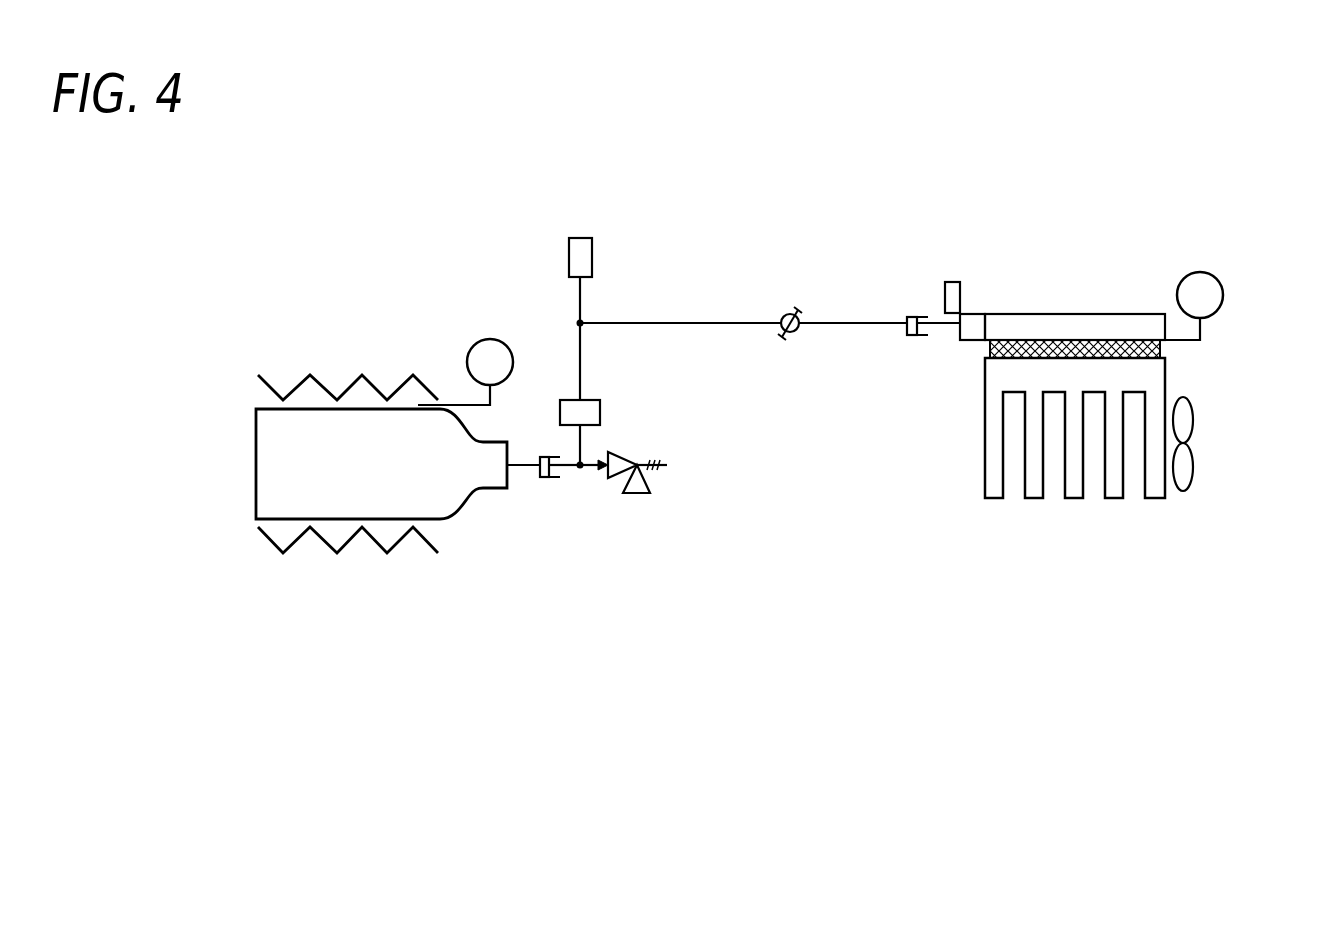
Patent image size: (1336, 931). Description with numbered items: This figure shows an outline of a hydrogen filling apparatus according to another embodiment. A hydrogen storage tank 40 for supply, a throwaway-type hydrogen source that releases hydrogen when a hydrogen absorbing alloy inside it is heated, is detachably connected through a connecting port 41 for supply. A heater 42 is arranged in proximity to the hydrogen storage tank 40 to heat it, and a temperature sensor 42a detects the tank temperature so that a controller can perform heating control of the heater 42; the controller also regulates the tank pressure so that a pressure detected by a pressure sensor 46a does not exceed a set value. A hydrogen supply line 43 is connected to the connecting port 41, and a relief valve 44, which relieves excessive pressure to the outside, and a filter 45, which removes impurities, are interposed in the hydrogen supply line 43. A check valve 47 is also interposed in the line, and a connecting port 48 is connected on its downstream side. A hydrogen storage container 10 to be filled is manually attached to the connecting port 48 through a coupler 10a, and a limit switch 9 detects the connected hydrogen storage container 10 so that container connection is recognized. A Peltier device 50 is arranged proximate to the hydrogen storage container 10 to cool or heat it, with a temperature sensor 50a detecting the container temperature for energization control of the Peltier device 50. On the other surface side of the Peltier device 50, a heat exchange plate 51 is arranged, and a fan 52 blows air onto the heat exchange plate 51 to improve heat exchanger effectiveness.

The limit switch 9 is at (943, 290).
The hydrogen storage container 10 is at (1097, 323).
The coupler 10a is at (973, 313).
The hydrogen storage tank for supply 40 is at (256, 459).
The connecting port for supply 41 is at (552, 479).
The heater 42 is at (298, 382).
The temperature sensor 42a is at (471, 346).
The hydrogen supply line 43 is at (580, 338).
The relief valve 44 is at (638, 495).
The filter 45 is at (600, 412).
The pressure sensor 46a is at (569, 250).
The check valve 47 is at (789, 313).
The connecting port 48 is at (910, 338).
The Peltier device 50 is at (1163, 351).
The temperature sensor 50a is at (1222, 281).
The heat exchange plate 51 is at (1032, 499).
The fan 52 is at (1193, 467).